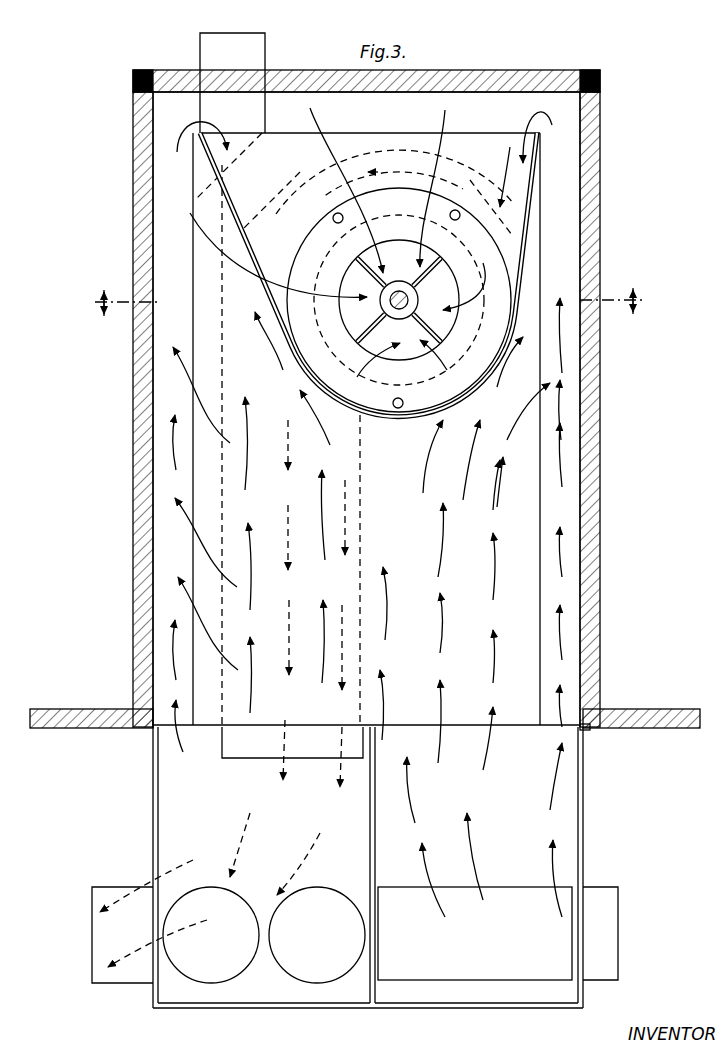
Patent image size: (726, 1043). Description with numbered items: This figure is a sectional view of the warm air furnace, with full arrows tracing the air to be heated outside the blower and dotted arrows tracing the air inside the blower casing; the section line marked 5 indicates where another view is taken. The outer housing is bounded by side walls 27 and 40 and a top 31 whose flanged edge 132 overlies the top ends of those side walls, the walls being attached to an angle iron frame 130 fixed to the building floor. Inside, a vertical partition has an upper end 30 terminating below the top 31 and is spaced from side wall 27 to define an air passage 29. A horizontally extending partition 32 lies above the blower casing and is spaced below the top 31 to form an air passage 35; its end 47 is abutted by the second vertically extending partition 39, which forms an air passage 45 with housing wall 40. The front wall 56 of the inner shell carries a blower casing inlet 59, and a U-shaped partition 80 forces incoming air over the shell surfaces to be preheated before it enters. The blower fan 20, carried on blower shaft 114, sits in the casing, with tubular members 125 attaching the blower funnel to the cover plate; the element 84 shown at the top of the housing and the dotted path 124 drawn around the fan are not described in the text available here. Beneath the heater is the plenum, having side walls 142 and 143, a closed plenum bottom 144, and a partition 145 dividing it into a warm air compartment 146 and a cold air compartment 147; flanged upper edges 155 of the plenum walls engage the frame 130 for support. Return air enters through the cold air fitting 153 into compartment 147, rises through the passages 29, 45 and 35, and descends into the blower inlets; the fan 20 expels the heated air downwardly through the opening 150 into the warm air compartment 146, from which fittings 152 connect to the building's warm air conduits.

The section line 5- 5 is at (369, 302).
The blower fan 20 is at (393, 243).
The side wall 27 is at (590, 338).
The air passage 29 is at (572, 395).
The upper end 30 is at (541, 290).
The top 31 is at (478, 78).
The horizontally extending partition 32 is at (405, 135).
The air passage 35 is at (520, 100).
The second vertically extending partition 39 is at (193, 393).
The side wall 40 is at (143, 450).
The air passage 45 is at (168, 527).
The end 47 is at (290, 126).
The front wall 56 is at (527, 570).
The blower casing inlet 59 is at (467, 240).
The U-shaped partition 80 is at (263, 282).
The motor housing 84 is at (200, 42).
The blower shaft 114 is at (409, 300).
The air flow path 124 is at (310, 227).
The tubular members 125 is at (456, 209).
The angle iron frame 130 is at (143, 712).
The flanged edge 132 is at (136, 80).
The side wall 142 is at (155, 840).
The side wall 143 is at (583, 817).
The plenum bottom 144 is at (285, 1008).
The partition 145 is at (376, 842).
The warm air compartment 146 is at (197, 1000).
The cold air compartment 147 is at (487, 1000).
The opening 150 is at (250, 758).
The fittings 152 is at (92, 935).
The cold air fitting 153 is at (515, 887).
The flanged upper edges 155 is at (587, 728).